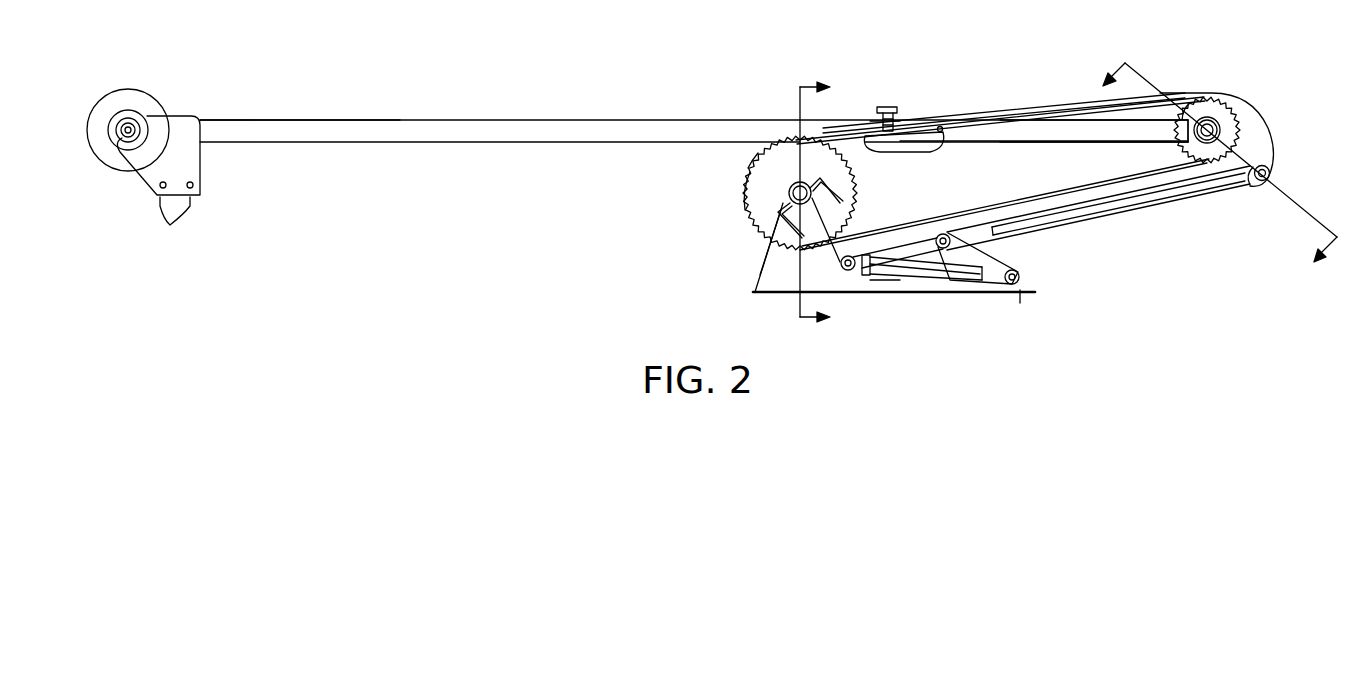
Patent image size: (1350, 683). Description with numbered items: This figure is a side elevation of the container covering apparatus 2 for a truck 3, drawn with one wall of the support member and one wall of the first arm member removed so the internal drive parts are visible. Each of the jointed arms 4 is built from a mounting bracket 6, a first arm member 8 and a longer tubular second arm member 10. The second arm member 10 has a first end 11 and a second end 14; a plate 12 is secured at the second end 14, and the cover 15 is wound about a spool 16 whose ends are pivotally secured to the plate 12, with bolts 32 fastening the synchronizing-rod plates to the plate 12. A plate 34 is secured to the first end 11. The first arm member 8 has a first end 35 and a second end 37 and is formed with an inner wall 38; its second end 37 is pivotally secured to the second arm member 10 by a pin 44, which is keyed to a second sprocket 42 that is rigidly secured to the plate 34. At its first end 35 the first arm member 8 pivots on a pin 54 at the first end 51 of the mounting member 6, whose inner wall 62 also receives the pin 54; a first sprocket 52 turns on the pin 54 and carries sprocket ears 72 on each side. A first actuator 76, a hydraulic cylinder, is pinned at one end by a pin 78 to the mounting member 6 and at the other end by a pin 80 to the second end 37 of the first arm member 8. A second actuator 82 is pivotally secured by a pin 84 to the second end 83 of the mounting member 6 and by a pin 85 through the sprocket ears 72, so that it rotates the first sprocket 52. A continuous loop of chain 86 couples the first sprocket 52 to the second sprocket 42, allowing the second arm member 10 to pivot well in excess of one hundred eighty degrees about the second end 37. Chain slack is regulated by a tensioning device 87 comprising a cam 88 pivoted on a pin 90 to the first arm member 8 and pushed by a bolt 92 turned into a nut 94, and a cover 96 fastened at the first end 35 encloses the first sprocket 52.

The container covering apparatus 2 is at (509, 207).
The truck 3 is at (1212, 173).
The jointed arms 4 is at (811, 23).
The mounting bracket 6 is at (747, 290).
The first arm member 8 is at (1025, 106).
The second arm member 10 is at (662, 117).
The first end of second arm member 11 is at (1153, 132).
The plate 12 is at (145, 167).
The second end of second arm member 14 is at (214, 130).
The cover 15 is at (143, 92).
The spool 16 is at (121, 125).
The bolts 32 is at (170, 226).
The plate 34 is at (1188, 113).
The first end of first arm member 35 is at (750, 228).
The second end of first arm member 37 is at (1247, 128).
The inner wall 38 is at (953, 195).
The second sprocket 42 is at (1215, 110).
The pin 44 is at (1218, 142).
The first end of mounting member 51 is at (760, 270).
The first sprocket 52 is at (758, 203).
The pin 54 is at (797, 182).
The inner wall 62 is at (882, 280).
The sprocket ears 72 is at (815, 257).
The first actuator 76 is at (1098, 218).
The pin 78 is at (948, 278).
The pin 80 is at (1270, 172).
The second actuator 82 is at (910, 278).
The second end of mounting member 83 is at (1012, 297).
The pin 84 is at (1016, 266).
The pin 85 is at (855, 272).
The chain 86 is at (1008, 142).
The tensioning device 87 is at (888, 162).
The cam 88 is at (912, 131).
The pin 90 is at (941, 126).
The bolt 92 is at (882, 103).
The nut 94 is at (877, 120).
The cover 96 is at (748, 167).